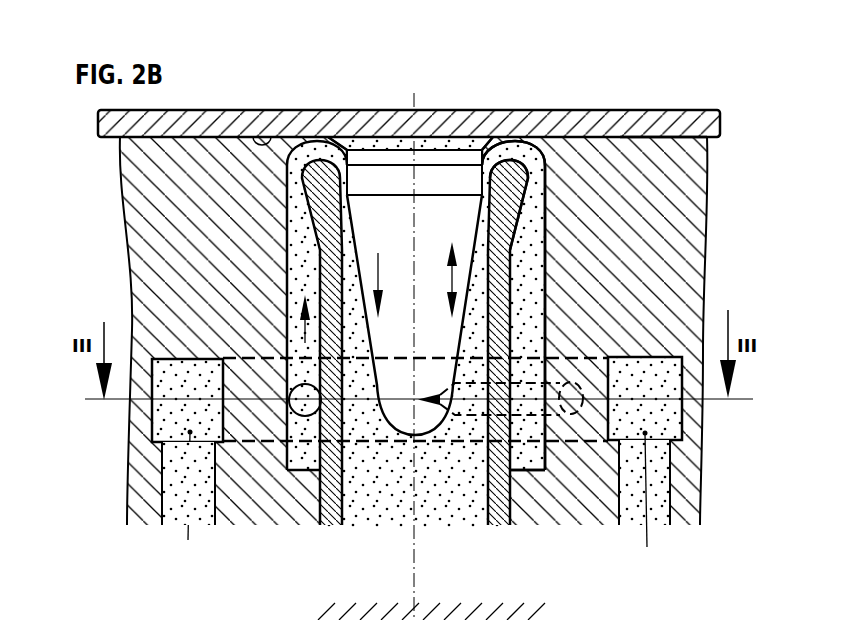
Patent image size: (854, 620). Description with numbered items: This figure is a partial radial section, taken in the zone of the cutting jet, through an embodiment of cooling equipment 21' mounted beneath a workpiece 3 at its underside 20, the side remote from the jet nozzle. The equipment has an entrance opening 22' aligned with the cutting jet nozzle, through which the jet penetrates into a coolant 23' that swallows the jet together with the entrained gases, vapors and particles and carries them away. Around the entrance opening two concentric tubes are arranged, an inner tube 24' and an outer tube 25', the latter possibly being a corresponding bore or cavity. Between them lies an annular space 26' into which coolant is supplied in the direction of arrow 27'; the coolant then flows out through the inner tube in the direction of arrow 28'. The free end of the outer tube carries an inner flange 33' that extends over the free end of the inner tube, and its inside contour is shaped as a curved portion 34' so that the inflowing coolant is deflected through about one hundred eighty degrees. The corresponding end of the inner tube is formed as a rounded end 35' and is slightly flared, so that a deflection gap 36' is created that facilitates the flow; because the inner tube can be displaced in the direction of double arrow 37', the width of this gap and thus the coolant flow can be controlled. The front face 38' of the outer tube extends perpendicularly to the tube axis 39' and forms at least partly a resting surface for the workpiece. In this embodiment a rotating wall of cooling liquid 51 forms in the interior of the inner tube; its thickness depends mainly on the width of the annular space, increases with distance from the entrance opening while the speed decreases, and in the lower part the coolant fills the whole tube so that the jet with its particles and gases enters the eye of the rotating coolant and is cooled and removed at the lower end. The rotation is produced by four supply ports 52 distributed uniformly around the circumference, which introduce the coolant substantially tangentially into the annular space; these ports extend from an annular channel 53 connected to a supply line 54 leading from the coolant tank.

The workpiece 3 is at (208, 128).
The underside 20 is at (262, 140).
The cooling equipment 21' is at (414, 105).
The entrance opening 22' is at (414, 121).
The coolant 23' is at (416, 364).
The inner tube 24' is at (511, 376).
The outer tube 25' is at (572, 446).
The annular space 26' is at (578, 523).
The arrow 27' is at (339, 376).
The arrow 28' is at (395, 422).
The inner flange 33' is at (500, 106).
The curved portion 34' is at (547, 149).
The rounded end 35' is at (570, 157).
The deflection gap 36' is at (522, 96).
The double arrow 37' is at (410, 82).
The front face 38' is at (663, 92).
The tube axis 39' is at (414, 241).
The rotating wall of cooling liquid 51 is at (453, 277).
The supply ports 52 is at (298, 418).
The annular channel 53 is at (200, 418).
The supply line 54 is at (175, 480).